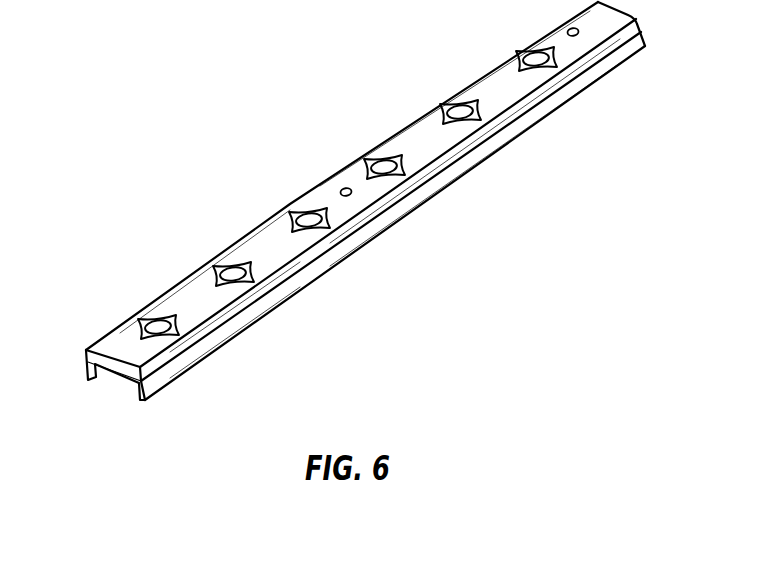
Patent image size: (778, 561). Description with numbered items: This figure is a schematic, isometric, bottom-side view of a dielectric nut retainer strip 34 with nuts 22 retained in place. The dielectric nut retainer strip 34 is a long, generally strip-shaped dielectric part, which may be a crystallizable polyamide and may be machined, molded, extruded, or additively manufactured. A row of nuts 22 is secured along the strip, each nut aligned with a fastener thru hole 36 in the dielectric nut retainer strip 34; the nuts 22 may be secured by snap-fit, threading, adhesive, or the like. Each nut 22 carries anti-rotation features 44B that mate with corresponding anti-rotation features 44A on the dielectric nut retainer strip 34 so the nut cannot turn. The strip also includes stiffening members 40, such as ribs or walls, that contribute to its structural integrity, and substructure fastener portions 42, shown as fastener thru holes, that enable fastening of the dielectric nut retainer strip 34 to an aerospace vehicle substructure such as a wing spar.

The nut 22 is at (160, 320).
The dielectric nut retainer strip 34 is at (193, 320).
The fastener thru hole 36 is at (305, 193).
The stiffening member 40 is at (84, 359).
The substructure fastener portion 42 is at (345, 188).
The anti-rotation feature 44A is at (138, 327).
The anti-rotation feature 44B is at (147, 315).